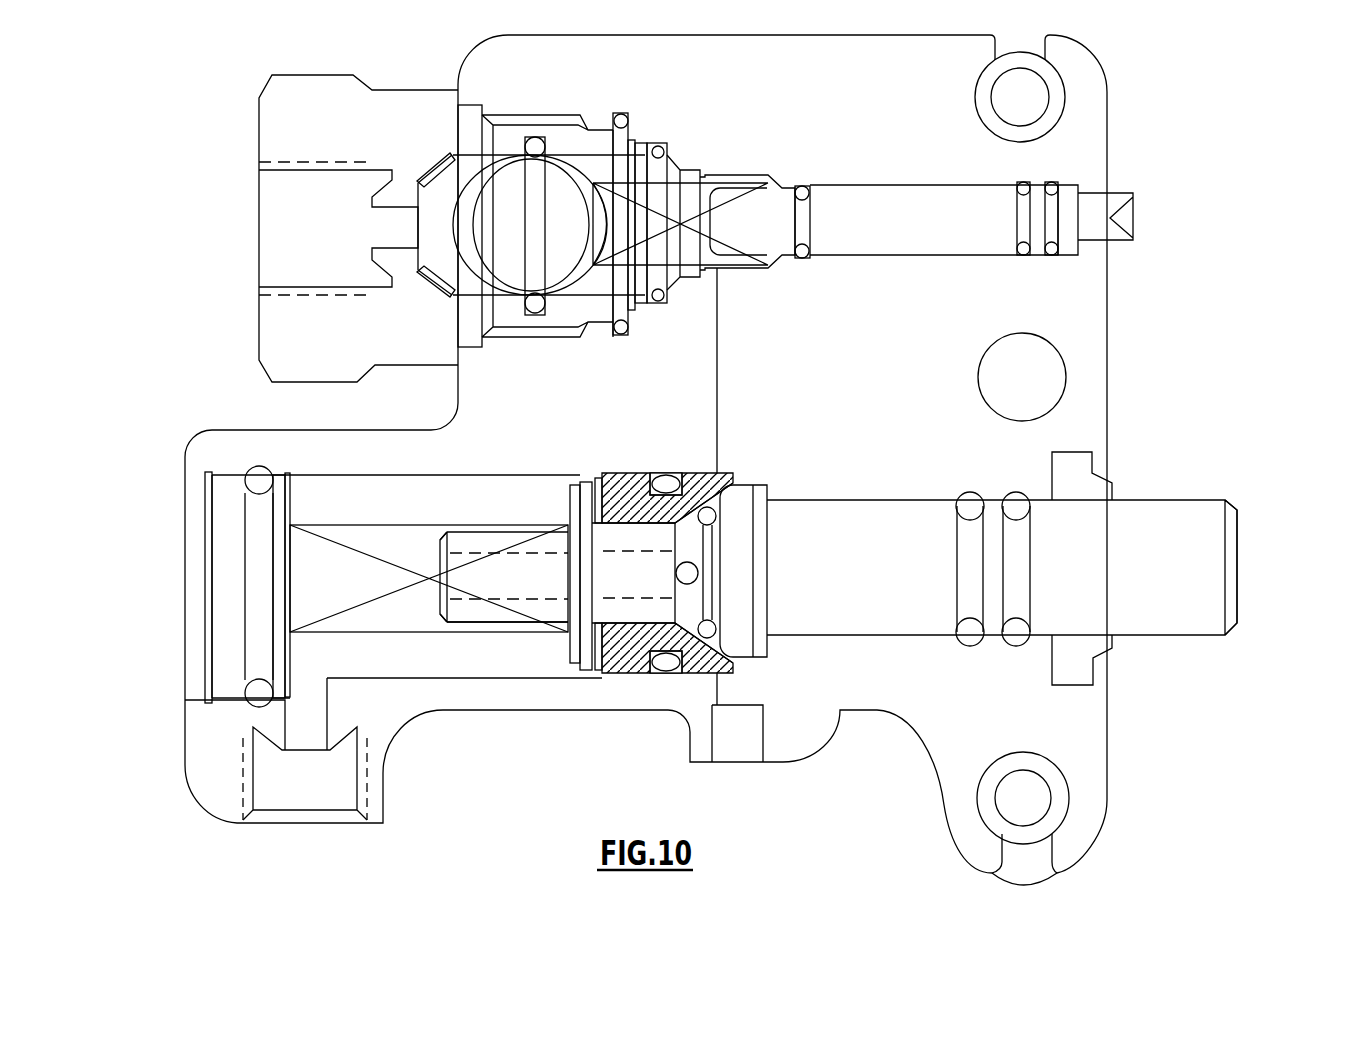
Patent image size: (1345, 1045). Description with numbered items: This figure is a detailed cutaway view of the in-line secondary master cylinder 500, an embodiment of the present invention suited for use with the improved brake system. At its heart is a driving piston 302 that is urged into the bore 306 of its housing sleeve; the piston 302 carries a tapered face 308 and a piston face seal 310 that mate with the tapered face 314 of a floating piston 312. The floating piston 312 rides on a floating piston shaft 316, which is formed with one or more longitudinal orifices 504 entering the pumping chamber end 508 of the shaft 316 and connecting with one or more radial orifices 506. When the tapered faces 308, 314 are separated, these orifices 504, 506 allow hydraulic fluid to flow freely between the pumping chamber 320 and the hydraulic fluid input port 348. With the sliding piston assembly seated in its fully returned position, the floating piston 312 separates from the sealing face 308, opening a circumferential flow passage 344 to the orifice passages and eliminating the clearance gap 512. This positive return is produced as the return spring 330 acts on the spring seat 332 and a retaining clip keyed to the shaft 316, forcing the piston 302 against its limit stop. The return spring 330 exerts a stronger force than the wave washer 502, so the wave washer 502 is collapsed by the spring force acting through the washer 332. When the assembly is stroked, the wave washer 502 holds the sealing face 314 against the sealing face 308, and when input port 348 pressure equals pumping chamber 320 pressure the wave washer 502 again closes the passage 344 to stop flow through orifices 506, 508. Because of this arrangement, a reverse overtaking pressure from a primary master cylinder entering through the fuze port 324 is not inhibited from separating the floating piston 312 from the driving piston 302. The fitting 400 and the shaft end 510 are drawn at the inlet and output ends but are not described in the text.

The piston 302 is at (1150, 503).
The bore 306 is at (1083, 662).
The tapered face 308 is at (758, 497).
The piston face seal 310 is at (718, 522).
The floating piston 312 is at (623, 473).
The tapered face 314 is at (697, 473).
The floating piston shaft 316 is at (483, 617).
The pumping chamber 320 is at (342, 663).
The fuze port 324 is at (282, 228).
The return spring 330 is at (403, 522).
The spring seat 332 is at (573, 642).
The circumferential flow passage 344 is at (733, 487).
The hydraulic fluid input port 348 is at (745, 328).
The fluid connector 400 is at (275, 132).
The master cylinder 500 is at (160, 357).
The wave washer 502 is at (580, 475).
The longitudinal orifice 504 is at (547, 567).
The radial orifice 506 is at (700, 568).
The pumping chamber end 508 is at (437, 592).
The shaft end 510 is at (1237, 595).
The clearance gap 512 is at (597, 473).